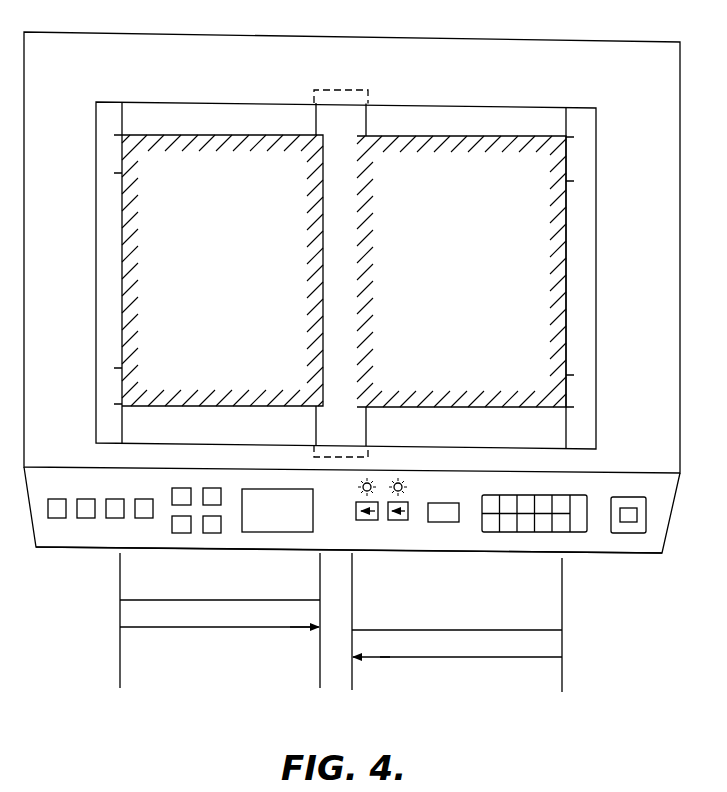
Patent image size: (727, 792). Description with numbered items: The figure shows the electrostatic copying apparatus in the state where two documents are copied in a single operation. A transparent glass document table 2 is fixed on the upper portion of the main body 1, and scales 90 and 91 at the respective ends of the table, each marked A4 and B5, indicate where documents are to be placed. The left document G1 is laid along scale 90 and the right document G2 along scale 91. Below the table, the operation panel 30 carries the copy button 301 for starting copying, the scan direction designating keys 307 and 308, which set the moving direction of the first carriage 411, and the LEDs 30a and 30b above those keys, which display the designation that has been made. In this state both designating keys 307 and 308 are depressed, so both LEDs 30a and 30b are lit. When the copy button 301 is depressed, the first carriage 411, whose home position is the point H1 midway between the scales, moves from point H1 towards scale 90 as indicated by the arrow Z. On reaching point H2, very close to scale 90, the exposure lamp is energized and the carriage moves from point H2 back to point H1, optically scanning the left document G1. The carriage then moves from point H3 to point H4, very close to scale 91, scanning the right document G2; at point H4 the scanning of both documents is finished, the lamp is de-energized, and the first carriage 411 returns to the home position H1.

The main body 1 is at (561, 40).
The document table 2 is at (535, 112).
The operation panel 30 is at (493, 556).
The copy button 301 is at (628, 534).
The scan direction designating key 307 is at (367, 521).
The scan direction designating key 308 is at (398, 521).
The LED 30a is at (371, 483).
The LED 30b is at (402, 483).
The first carriage 411 is at (368, 124).
The scale 90 is at (100, 238).
The scale 91 is at (588, 248).
The left document G1 is at (195, 135).
The right document G2 is at (454, 137).
The point H1 is at (224, 636).
The point H2 is at (118, 636).
The point H3 is at (350, 636).
The point H4 is at (461, 639).
The arrow Z is at (333, 660).